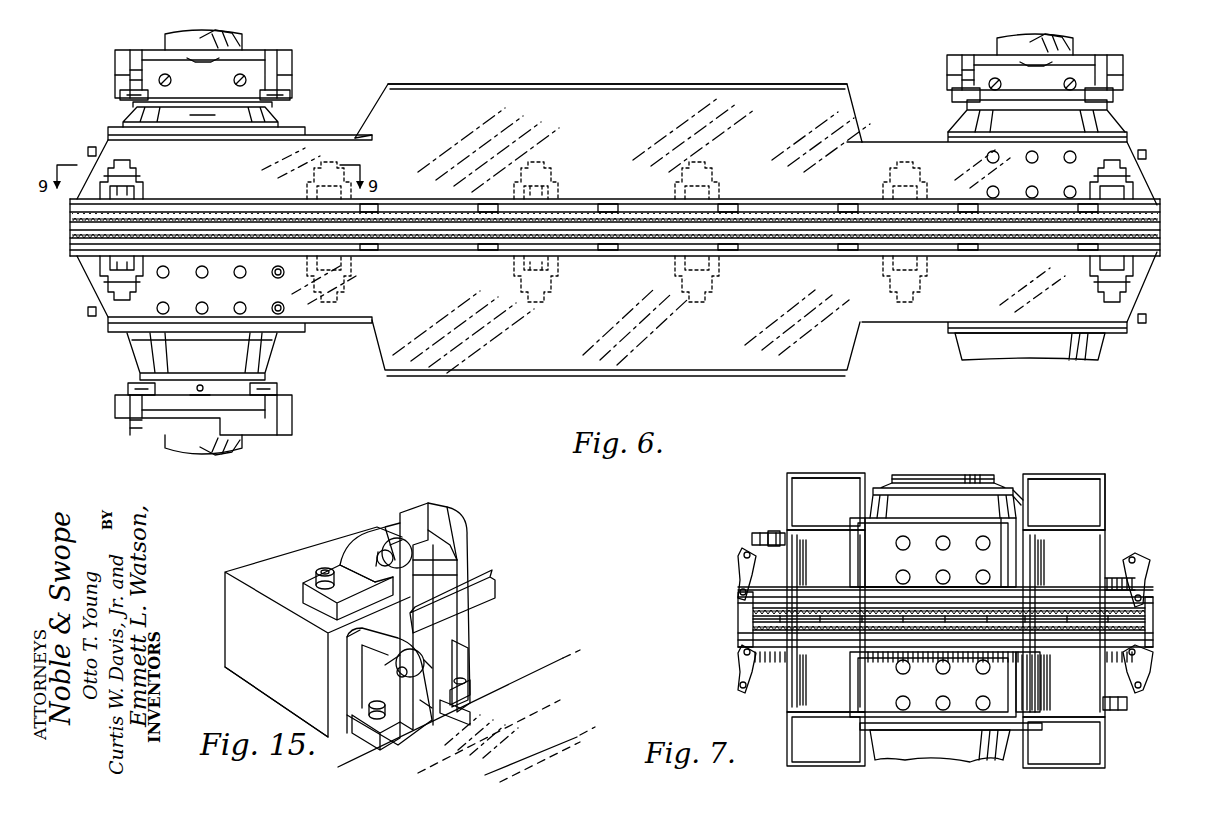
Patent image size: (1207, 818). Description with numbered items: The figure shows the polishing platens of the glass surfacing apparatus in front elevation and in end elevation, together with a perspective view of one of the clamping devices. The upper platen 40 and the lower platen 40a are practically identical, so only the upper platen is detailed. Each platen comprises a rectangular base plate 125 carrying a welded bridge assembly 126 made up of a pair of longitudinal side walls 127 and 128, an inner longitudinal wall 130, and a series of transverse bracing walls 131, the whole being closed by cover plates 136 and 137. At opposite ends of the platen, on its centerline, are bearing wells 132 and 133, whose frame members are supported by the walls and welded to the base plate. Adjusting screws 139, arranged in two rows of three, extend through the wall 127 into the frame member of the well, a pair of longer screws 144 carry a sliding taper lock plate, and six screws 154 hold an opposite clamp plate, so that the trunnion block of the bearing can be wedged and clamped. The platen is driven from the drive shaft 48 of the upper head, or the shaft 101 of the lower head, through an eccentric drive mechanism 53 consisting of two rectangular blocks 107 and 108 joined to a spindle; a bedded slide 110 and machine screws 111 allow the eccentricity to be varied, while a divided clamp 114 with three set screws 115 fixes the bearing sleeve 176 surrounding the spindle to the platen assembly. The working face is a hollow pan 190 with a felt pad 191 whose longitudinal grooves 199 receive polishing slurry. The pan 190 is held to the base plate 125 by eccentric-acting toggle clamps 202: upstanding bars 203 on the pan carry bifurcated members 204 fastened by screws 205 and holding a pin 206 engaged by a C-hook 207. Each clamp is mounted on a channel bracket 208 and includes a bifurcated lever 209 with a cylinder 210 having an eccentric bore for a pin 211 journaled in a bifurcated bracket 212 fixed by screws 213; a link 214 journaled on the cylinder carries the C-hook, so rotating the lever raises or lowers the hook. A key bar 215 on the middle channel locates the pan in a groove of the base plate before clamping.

In FIG. 6, the upper platen assembly 40 is at (492, 78).
In FIG. 7, the upper platen assembly 40 is at (877, 477).
In FIG. 6, the lower platen assembly 40a is at (473, 380).
In FIG. 7, the lower platen assembly 40a is at (780, 698).
In FIG. 6, the drive shaft 48 is at (207, 42).
In FIG. 6, the eccentric drive mechanism 53 is at (302, 57).
In FIG. 6, the shaft 101 is at (223, 442).
In FIG. 6, the rectangular block 107 is at (147, 58).
In FIG. 6, the rectangular block 108 is at (122, 77).
In FIG. 6, the bedded slide 110 is at (203, 62).
In FIG. 6, the machine screw 111 is at (130, 93).
In FIG. 6, the divided clamp 114 is at (192, 385).
In FIG. 6, the set screw 115 is at (200, 393).
In FIG. 6, the base plate 125 is at (414, 199).
In FIG. 7, the base plate 125 is at (778, 590).
In FIG. 15, the base plate 125 is at (224, 688).
In FIG. 6, the bridge assembly 126 is at (553, 112).
In FIG. 7, the bridge assembly 126 is at (803, 472).
In FIG. 6, the wall 127 is at (580, 340).
In FIG. 7, the wall 127 is at (790, 496).
In FIG. 6, the wall 128 is at (626, 130).
In FIG. 7, the wall 128 is at (1105, 500).
In FIG. 7, the wall 130 is at (1020, 498).
In FIG. 7, the bracing wall 131 is at (818, 552).
In FIG. 6, the bearing well 132 is at (300, 130).
In FIG. 7, the bearing well 132 is at (935, 472).
In FIG. 6, the bearing well 133 is at (945, 136).
In FIG. 6, the cover plate 136 is at (357, 136).
In FIG. 7, the cover plate 136 is at (820, 530).
In FIG. 6, the cover plate 137 is at (718, 90).
In FIG. 7, the cover plate 137 is at (834, 478).
In FIG. 6, the adjusting screw 139 is at (240, 304).
In FIG. 7, the adjusting screw 139 is at (765, 535).
In FIG. 6, the screw 144 is at (285, 308).
In FIG. 7, the screw 144 is at (752, 539).
In FIG. 6, the screw 154 is at (90, 150).
In FIG. 7, the screw 154 is at (976, 573).
In FIG. 7, the bearing sleeve 176 is at (972, 482).
In FIG. 7, the pan 190 is at (738, 598).
In FIG. 15, the pan 190 is at (548, 752).
In FIG. 7, the felt pad 191 is at (738, 618).
In FIG. 7, the groove 199 is at (1067, 608).
In FIG. 6, the toggle clamp 202 is at (145, 182).
In FIG. 7, the toggle clamp 202 is at (740, 556).
In FIG. 15, the toggle clamp 202 is at (502, 596).
In FIG. 6, the upstanding bar 203 is at (220, 212).
In FIG. 15, the upstanding bar 203 is at (517, 690).
In FIG. 15, the bifurcated member 204 is at (372, 690).
In FIG. 15, the screw 205 is at (470, 681).
In FIG. 15, the pin 206 is at (398, 668).
In FIG. 15, the C-hook 207 is at (465, 655).
In FIG. 15, the channel bracket 208 is at (297, 577).
In FIG. 15, the bifurcated lever 209 is at (450, 582).
In FIG. 15, the cylinder 210 is at (406, 506).
In FIG. 15, the pin 211 is at (392, 538).
In FIG. 15, the bifurcated bracket 212 is at (370, 550).
In FIG. 15, the screw 213 is at (325, 570).
In FIG. 15, the link 214 is at (462, 590).
In FIG. 6, the key bar 215 is at (612, 199).